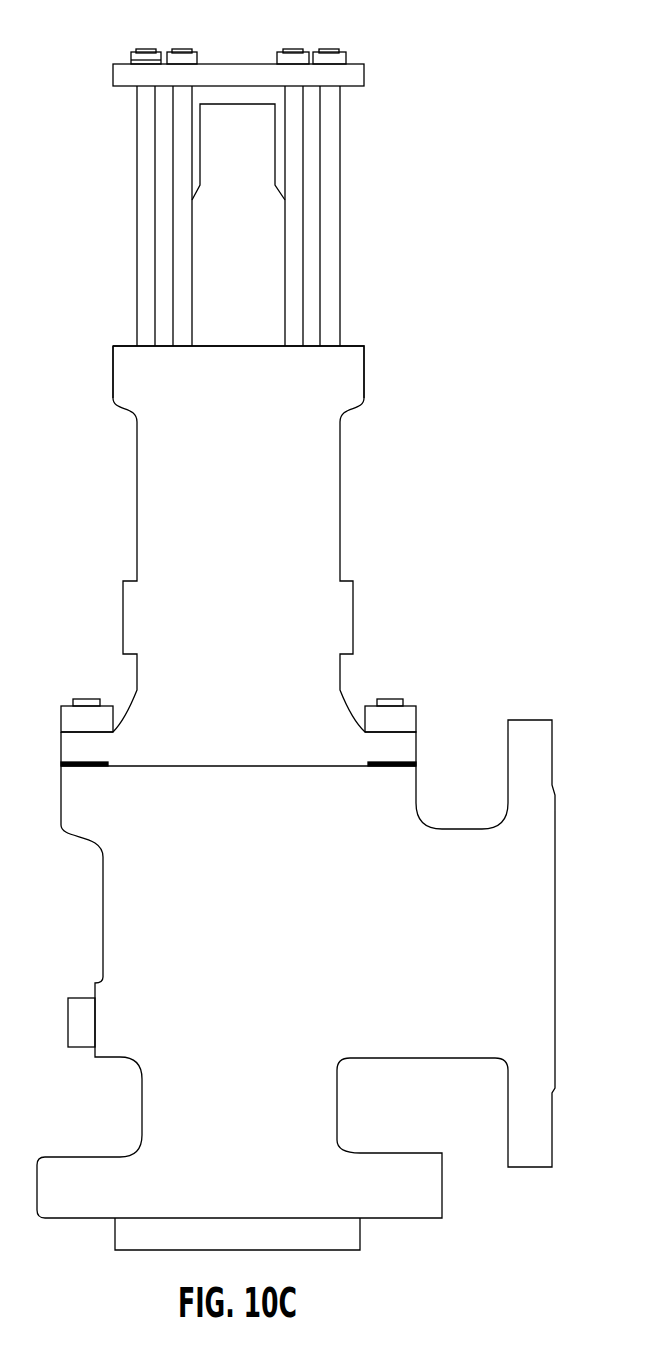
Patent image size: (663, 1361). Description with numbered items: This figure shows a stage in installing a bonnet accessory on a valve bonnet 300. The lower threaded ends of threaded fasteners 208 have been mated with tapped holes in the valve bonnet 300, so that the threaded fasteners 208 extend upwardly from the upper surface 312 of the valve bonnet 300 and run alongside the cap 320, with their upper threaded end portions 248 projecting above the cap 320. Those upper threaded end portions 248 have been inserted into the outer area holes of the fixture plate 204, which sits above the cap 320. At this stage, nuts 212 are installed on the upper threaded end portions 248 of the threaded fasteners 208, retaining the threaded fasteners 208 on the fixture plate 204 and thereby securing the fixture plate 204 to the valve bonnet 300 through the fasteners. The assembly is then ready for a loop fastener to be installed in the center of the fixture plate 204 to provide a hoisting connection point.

The fixture plate 204 is at (239, 62).
The threaded fasteners 208 is at (137, 190).
The nuts 212 is at (129, 63).
The upper threaded end portions 248 is at (150, 47).
The valve bonnet 300 is at (342, 495).
The upper surface 312 is at (127, 346).
The cap 320 is at (275, 140).